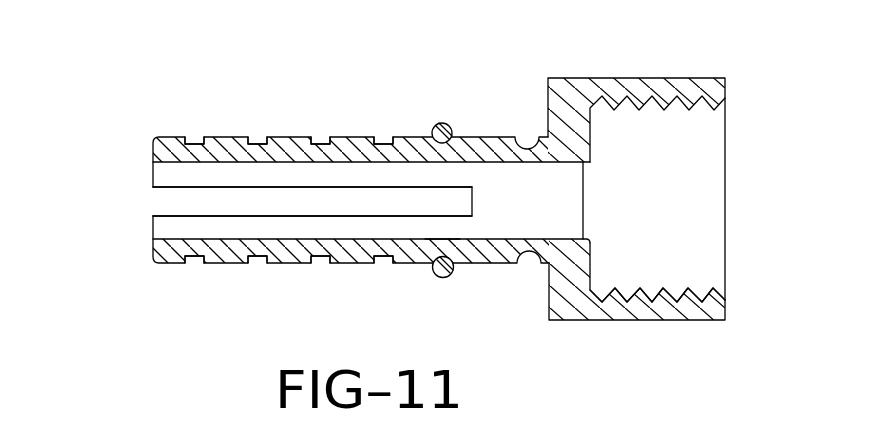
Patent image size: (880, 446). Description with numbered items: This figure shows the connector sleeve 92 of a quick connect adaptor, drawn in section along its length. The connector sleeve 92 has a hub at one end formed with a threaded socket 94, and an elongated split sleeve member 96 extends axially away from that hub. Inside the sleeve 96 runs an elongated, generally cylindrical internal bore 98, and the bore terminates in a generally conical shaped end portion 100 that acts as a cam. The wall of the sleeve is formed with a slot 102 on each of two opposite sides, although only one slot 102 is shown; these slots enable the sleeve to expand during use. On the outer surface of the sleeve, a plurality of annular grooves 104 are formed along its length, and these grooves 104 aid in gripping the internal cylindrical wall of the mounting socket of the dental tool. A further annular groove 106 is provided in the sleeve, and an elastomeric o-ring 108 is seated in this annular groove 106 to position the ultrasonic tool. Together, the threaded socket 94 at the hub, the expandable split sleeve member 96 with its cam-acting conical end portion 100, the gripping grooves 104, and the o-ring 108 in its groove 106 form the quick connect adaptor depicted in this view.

The connector sleeve 92 is at (600, 78).
The threaded socket 94 is at (648, 290).
The split sleeve member 96 is at (290, 264).
The internal cylindrical bore 98 is at (438, 240).
The conical shaped end portion 100 is at (177, 217).
The slot 102 is at (255, 207).
The annular grooves 104 is at (197, 262).
The annular groove 106 is at (452, 256).
The elastomeric o-ring 108 is at (449, 126).